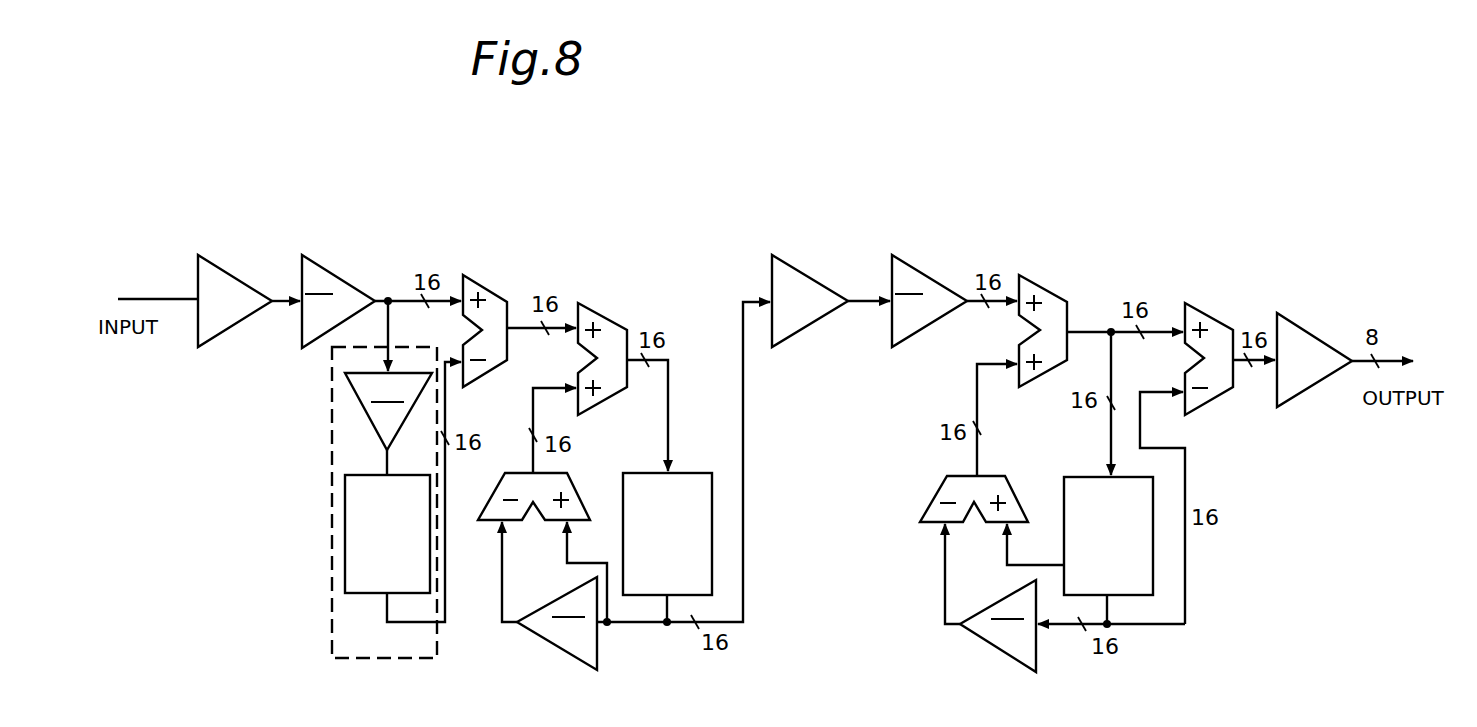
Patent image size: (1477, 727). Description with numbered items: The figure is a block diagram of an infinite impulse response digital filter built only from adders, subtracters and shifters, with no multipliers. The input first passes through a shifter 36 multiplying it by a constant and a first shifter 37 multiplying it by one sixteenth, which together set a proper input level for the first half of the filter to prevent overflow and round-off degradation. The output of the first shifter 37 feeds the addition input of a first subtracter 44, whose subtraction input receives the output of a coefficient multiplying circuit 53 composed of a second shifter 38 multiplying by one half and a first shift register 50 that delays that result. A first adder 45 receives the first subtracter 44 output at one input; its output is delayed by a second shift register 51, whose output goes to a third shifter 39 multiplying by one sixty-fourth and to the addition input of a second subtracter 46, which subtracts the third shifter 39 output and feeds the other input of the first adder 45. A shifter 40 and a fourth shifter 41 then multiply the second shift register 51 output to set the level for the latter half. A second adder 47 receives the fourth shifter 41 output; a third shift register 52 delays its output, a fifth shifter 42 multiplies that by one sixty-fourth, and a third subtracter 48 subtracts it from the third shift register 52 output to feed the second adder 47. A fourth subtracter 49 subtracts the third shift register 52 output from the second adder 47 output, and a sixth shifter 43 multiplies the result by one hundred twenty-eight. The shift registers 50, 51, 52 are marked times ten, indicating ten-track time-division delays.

The shifter 36 is at (232, 273).
The first shifter 37 is at (351, 277).
The second shifter 38 is at (345, 400).
The third shifter 39 is at (598, 655).
The shifter 40 is at (819, 319).
The fourth shifter 41 is at (912, 268).
The fifth shifter 42 is at (972, 635).
The sixth shifter 43 is at (1298, 397).
The first subtracter 44 is at (482, 286).
The first adder 45 is at (604, 305).
The second subtracter 46 is at (485, 523).
The second adder 47 is at (1042, 287).
The third subtracter 48 is at (942, 492).
The fourth subtracter 49 is at (1194, 305).
The first shift register 50 is at (345, 505).
The second shift register 51 is at (688, 473).
The third shift register 52 is at (1080, 477).
The coefficient multiplying circuit 53 is at (332, 633).